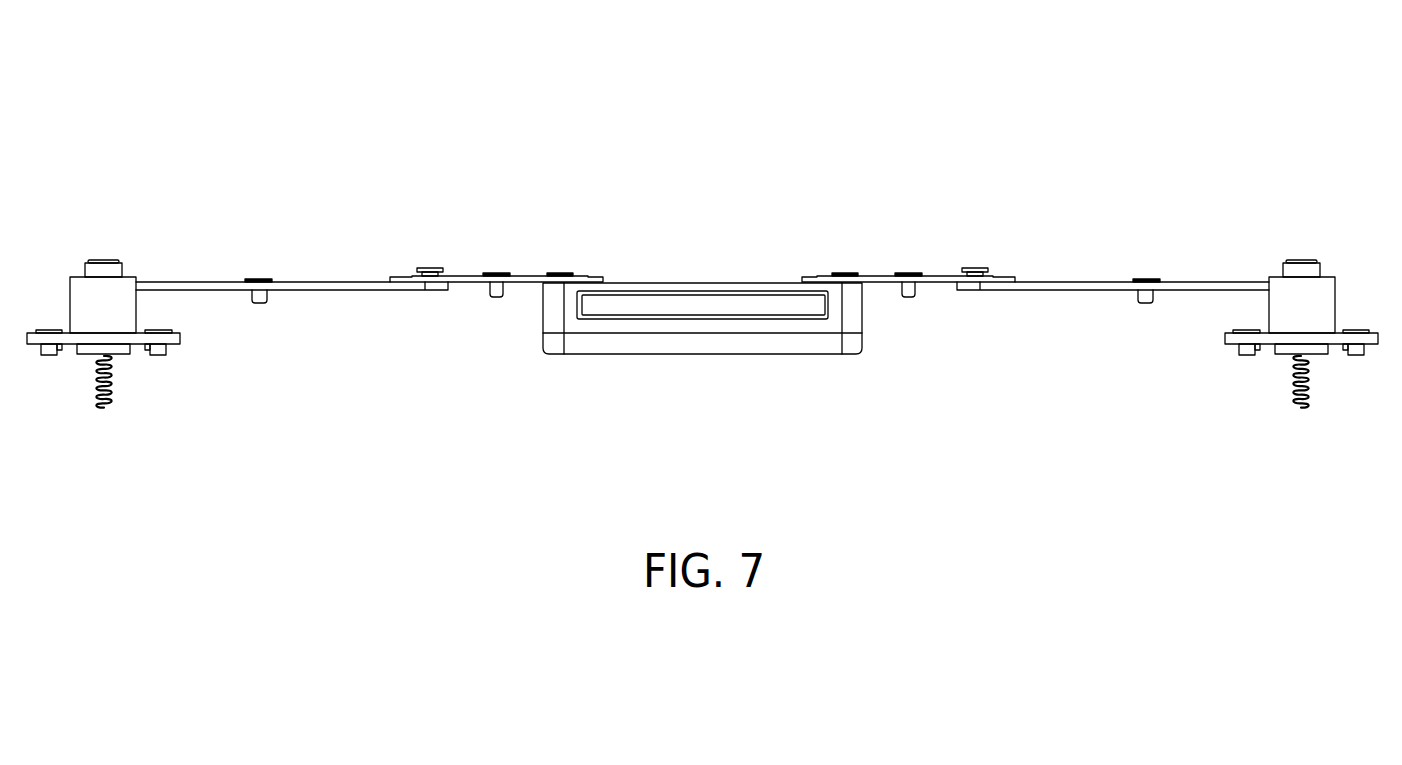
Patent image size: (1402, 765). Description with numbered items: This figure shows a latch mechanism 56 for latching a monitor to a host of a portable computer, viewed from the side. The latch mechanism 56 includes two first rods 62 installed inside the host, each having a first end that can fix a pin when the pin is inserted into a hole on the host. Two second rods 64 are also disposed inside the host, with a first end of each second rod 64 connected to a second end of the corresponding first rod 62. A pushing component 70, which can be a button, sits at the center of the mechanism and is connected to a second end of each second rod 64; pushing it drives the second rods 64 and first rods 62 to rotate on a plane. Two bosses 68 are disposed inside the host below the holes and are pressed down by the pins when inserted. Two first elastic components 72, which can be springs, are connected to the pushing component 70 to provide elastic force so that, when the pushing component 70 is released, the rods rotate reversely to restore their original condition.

The latch mechanism 56 is at (706, 112).
The first rod 62 is at (312, 282).
The second rod 64 is at (525, 276).
The boss 68 is at (100, 260).
The pushing component 70 is at (705, 354).
The first elastic component 72 is at (104, 408).